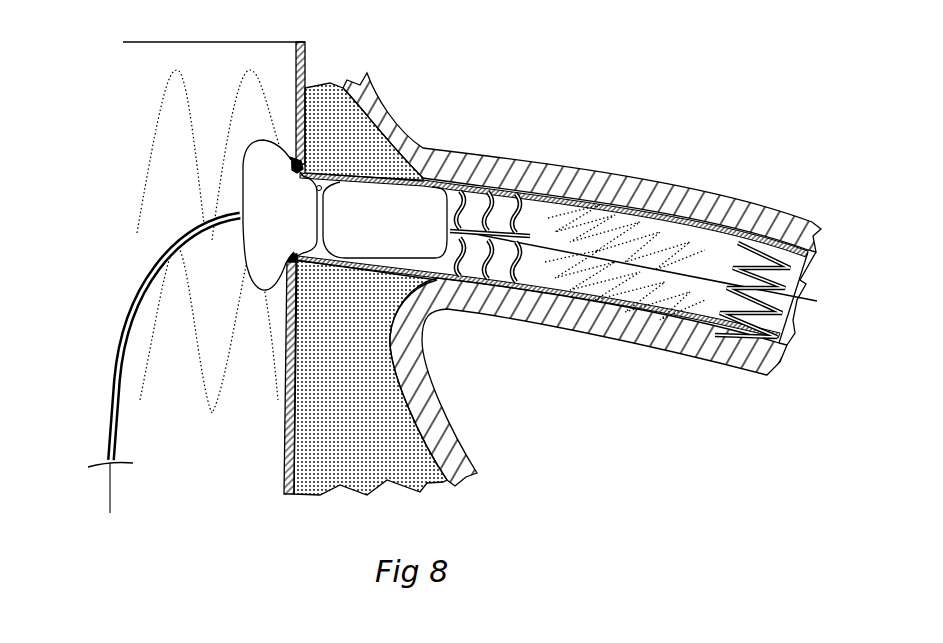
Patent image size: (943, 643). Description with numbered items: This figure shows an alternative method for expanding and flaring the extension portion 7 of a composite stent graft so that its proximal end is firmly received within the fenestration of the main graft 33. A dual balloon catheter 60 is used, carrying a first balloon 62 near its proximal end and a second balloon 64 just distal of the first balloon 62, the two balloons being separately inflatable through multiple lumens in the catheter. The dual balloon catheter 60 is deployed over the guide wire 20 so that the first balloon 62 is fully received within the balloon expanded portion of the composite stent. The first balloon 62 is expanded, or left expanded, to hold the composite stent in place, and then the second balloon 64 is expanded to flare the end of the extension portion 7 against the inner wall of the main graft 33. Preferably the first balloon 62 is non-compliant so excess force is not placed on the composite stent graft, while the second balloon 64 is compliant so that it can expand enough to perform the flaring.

The extension portion 7 is at (314, 112).
The guide wire 20 is at (682, 243).
The main graft 33 is at (287, 448).
The dual balloon catheter 60 is at (118, 332).
The first balloon 62 is at (415, 227).
The second balloon 64 is at (267, 182).